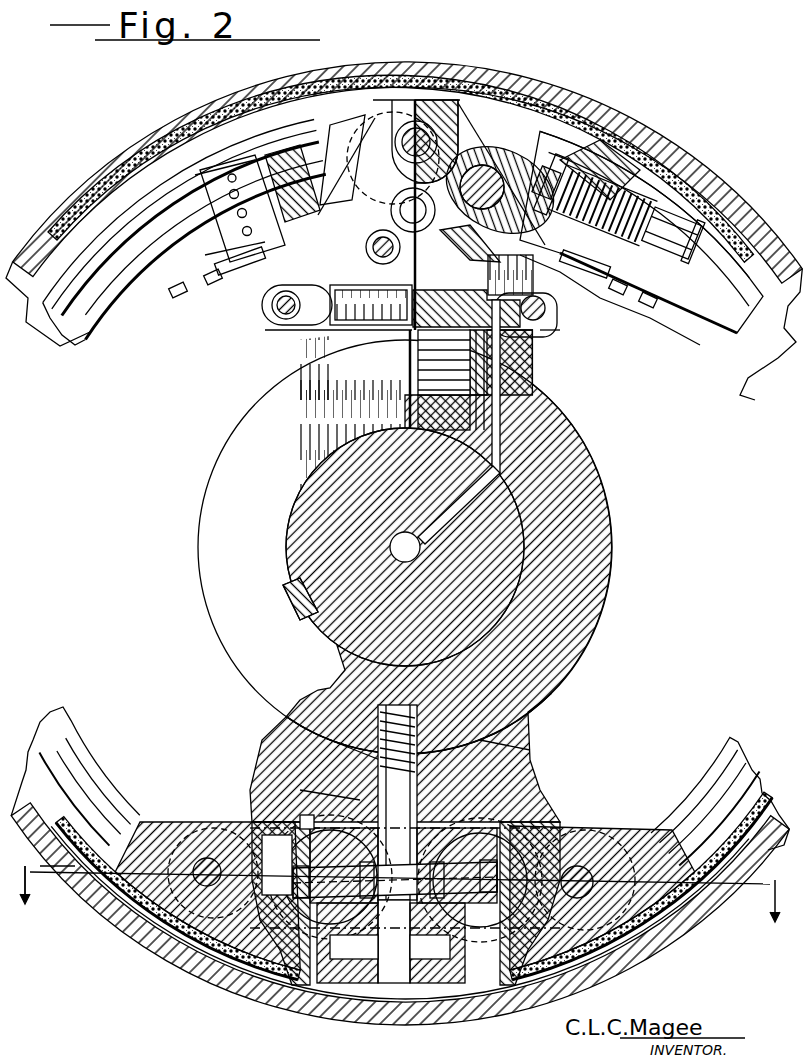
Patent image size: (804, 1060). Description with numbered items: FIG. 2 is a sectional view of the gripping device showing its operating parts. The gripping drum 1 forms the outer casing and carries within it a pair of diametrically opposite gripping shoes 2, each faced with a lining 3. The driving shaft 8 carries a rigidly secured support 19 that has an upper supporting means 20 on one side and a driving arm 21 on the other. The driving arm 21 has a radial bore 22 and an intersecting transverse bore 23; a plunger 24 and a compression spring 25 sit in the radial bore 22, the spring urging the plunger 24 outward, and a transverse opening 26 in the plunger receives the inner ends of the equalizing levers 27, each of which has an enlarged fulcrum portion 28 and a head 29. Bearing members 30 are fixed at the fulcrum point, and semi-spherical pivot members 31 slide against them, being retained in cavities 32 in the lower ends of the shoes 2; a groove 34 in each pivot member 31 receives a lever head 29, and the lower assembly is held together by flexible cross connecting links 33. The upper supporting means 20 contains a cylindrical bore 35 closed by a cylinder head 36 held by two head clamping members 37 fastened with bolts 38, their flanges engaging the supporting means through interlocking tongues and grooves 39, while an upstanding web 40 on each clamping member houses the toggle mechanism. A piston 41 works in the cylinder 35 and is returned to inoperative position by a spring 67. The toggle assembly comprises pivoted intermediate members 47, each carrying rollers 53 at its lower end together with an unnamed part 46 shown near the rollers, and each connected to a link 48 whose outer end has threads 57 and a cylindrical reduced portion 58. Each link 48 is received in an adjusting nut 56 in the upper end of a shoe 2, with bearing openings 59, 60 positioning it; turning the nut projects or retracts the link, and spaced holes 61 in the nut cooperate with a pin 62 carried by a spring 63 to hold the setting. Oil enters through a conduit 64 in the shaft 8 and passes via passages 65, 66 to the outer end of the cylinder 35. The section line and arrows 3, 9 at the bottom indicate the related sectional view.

The gripping drum 1 is at (108, 185).
The gripping shoes 2 is at (78, 748).
The lining 3 is at (40, 842).
The driving shaft 8 is at (290, 543).
The section arrow 9 is at (398, 910).
The support 19 is at (205, 470).
The upper supporting means 20 is at (522, 368).
The driving arm 21 is at (320, 748).
The radial bore 22 is at (497, 738).
The transverse bore 23 is at (320, 792).
The plunger 24 is at (418, 800).
The compression spring 25 is at (325, 756).
The transverse opening 26 is at (476, 900).
The equalizing levers 27 is at (417, 863).
The fulcrum portion 28 is at (330, 899).
The head 29 is at (268, 820).
The bearing members 30 is at (306, 818).
The pivot members 31 is at (258, 912).
The cavities 32 is at (245, 820).
The cross connecting links 33 is at (150, 960).
The groove 34 is at (213, 978).
The cylindrical bore 35 is at (520, 386).
The cylinder head 36 is at (478, 292).
The head clamping members 37 is at (548, 314).
The bolts 38 is at (280, 328).
The interlocking tongues and grooves 39 is at (586, 348).
The upstanding web 40 is at (330, 230).
The piston 41 is at (414, 350).
The roller 46 is at (368, 250).
The intermediate members 47 is at (540, 278).
The link 48 is at (590, 175).
The rollers 53 is at (398, 262).
The adjusting nut 56 is at (213, 190).
The threads 57 is at (640, 190).
The cylindrical reduced portion 58 is at (665, 235).
The bearing opening 59 is at (596, 155).
The bearing opening 60 is at (690, 238).
The holes 61 is at (205, 226).
The pin 62 is at (232, 265).
The spring 63 is at (248, 278).
The conduit 64 is at (398, 545).
The passage 65 is at (441, 505).
The passage 66 is at (505, 412).
The return spring 67 is at (416, 382).